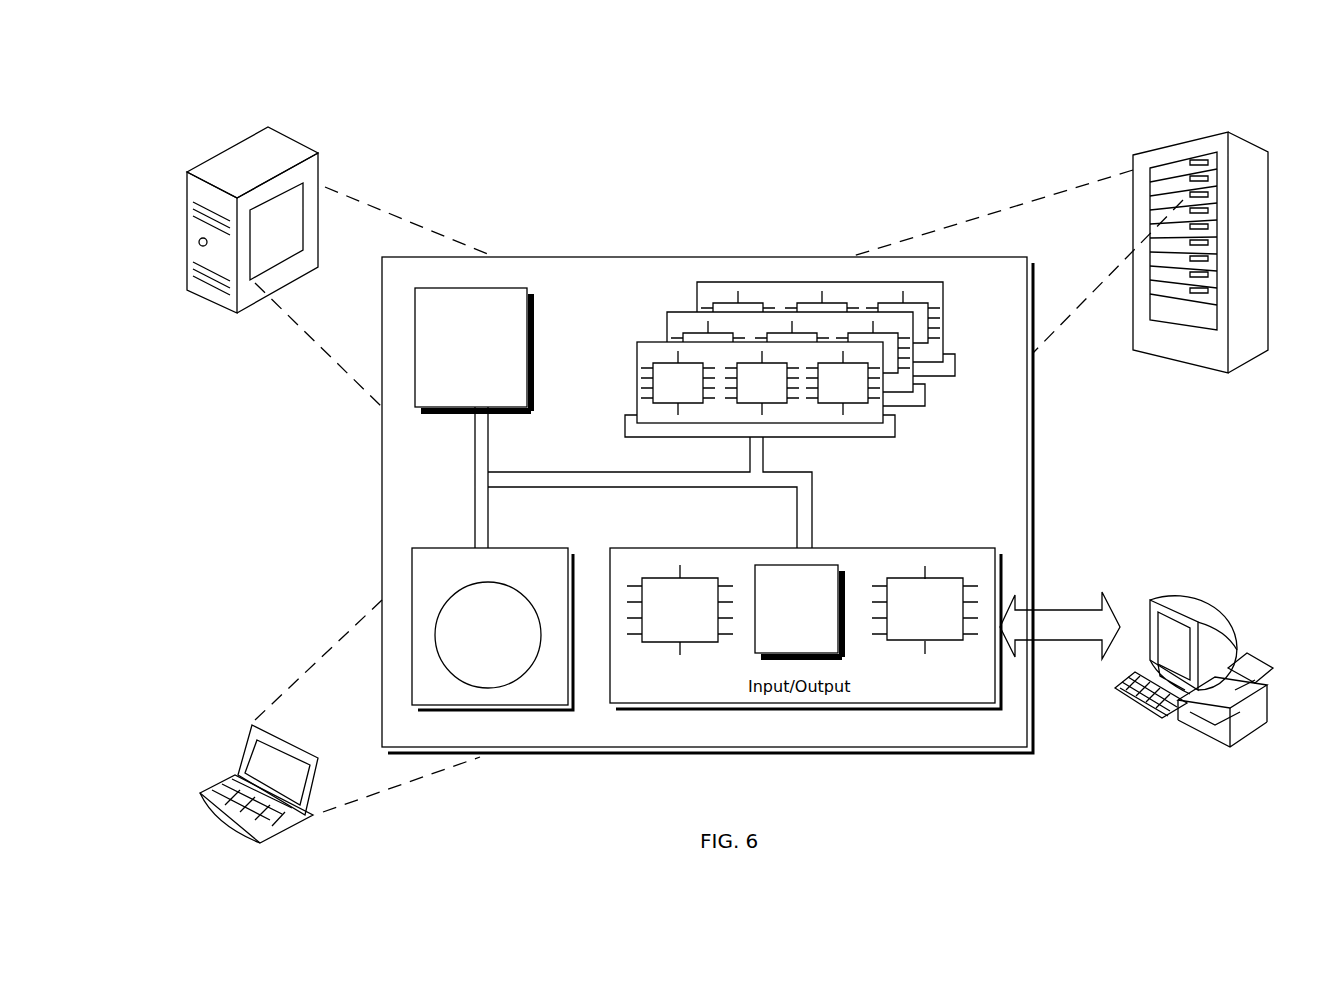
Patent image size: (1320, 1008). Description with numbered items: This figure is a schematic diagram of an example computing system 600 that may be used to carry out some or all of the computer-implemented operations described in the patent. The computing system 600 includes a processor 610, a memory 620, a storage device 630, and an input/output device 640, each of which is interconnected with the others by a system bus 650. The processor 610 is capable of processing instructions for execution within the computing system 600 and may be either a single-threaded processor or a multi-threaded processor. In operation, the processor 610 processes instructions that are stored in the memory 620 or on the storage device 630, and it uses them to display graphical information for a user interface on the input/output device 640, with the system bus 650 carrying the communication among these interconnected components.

The computing system 600 is at (187, 107).
The processor 610 is at (473, 349).
The memory 620 is at (948, 400).
The storage device 630 is at (492, 629).
The input/output device 640 is at (1146, 600).
The system bus 650 is at (640, 489).